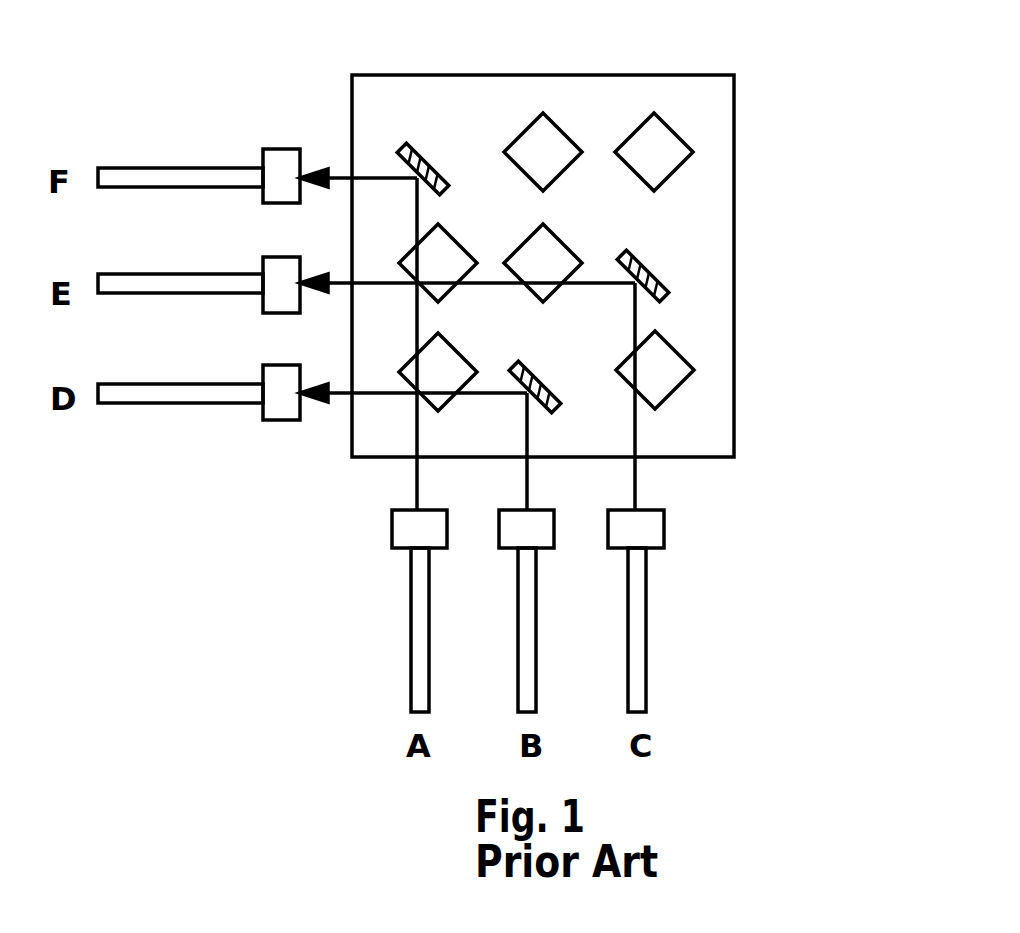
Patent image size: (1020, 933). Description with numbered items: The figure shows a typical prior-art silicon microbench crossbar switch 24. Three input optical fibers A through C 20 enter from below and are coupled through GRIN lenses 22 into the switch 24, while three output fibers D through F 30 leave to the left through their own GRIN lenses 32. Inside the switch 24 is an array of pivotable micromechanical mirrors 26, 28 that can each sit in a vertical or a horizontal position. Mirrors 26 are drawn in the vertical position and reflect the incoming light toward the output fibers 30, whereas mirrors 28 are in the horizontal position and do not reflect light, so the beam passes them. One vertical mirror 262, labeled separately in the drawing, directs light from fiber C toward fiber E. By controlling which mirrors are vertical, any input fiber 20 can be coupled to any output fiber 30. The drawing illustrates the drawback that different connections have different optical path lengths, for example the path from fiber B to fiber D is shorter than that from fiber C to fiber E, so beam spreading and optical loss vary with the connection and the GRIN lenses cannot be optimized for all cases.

The input optical fibers 20 is at (411, 657).
The GRIN lenses 22 is at (392, 528).
The silicon microbench crossbar switch 24 is at (780, 120).
The pivotable micromechanical mirrors 26 is at (423, 155).
The pivotable micromechanical mirrors 28 is at (552, 120).
The output fibers 30 is at (183, 167).
The GRIN lenses 32 is at (283, 148).
The mirror 262 is at (647, 265).